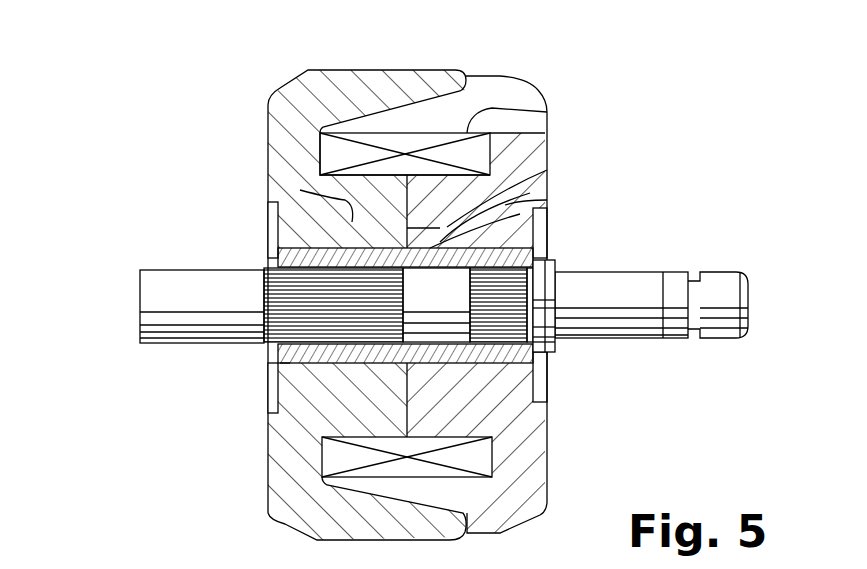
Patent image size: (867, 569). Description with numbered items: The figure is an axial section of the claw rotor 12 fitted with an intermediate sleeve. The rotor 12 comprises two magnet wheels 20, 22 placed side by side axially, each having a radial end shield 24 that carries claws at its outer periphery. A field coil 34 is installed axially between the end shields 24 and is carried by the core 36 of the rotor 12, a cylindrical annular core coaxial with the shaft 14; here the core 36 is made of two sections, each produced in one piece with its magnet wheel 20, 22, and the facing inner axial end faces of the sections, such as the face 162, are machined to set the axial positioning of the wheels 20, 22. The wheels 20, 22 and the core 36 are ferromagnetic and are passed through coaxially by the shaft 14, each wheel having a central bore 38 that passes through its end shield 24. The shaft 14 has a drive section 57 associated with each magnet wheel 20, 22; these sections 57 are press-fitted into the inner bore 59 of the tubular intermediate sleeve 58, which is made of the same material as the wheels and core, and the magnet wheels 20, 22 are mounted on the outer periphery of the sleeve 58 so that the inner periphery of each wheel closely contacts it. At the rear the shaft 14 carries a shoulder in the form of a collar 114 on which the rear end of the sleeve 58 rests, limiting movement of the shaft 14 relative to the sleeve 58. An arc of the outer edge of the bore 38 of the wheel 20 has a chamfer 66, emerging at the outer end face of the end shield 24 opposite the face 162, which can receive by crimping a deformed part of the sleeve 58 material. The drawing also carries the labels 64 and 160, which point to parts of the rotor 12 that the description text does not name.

The claw rotor 12 is at (150, 198).
The shaft 14 is at (431, 363).
The magnet wheel 20 is at (248, 198).
The magnet wheel 22 is at (436, 314).
The radial end shield 24 is at (283, 487).
The field coil 34 is at (548, 113).
The core 36 is at (420, 190).
The central bore 38 is at (283, 257).
The drive section 57 is at (262, 305).
The intermediate sleeve 58 is at (332, 360).
The inner bore 59 is at (547, 200).
The core 64 is at (405, 221).
The chamfer 66 is at (280, 363).
The collar 114 is at (556, 345).
The rotor lamination 160 is at (300, 190).
The inner face 162 is at (547, 170).